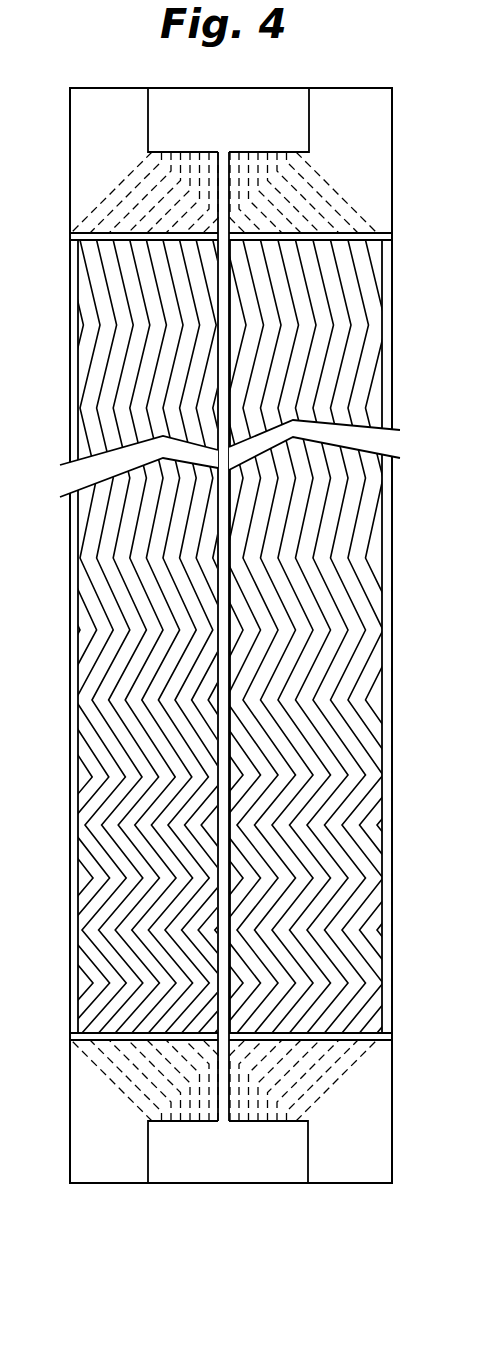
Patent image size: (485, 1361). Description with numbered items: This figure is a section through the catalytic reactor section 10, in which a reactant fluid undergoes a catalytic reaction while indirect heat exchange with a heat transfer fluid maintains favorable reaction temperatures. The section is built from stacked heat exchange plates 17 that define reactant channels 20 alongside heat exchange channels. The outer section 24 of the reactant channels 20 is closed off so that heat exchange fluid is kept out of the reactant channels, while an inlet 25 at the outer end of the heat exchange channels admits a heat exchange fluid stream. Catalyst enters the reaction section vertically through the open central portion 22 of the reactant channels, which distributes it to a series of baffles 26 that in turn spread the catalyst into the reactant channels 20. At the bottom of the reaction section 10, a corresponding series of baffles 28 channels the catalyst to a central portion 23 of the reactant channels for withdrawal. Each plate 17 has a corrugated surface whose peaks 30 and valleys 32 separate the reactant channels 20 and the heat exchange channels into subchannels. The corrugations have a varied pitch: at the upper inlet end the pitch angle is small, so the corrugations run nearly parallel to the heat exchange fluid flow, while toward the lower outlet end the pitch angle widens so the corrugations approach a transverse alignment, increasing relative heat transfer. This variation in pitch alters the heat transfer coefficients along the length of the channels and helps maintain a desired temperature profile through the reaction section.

The catalytic reactor section 10 is at (383, 721).
The heat exchange plate 17 is at (304, 636).
The reactant channel 20 is at (304, 636).
The central portion of the reactant channels 22 is at (261, 106).
The central portion of the reactant channels 23 is at (262, 1158).
The outer section of reactant channels 24 is at (350, 130).
The inlet 25 is at (345, 1148).
The baffles 26 is at (333, 197).
The baffles 28 is at (329, 1080).
The peaks 30 is at (322, 327).
The valleys 32 is at (125, 296).